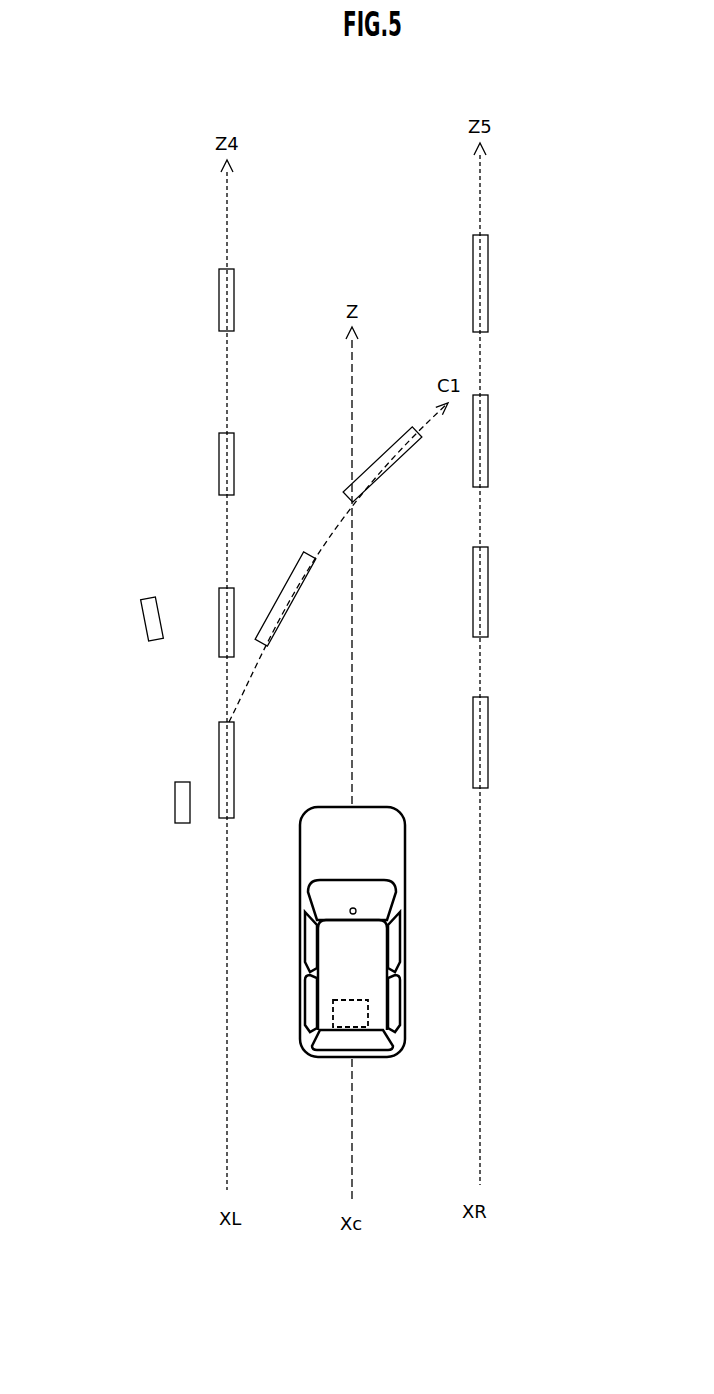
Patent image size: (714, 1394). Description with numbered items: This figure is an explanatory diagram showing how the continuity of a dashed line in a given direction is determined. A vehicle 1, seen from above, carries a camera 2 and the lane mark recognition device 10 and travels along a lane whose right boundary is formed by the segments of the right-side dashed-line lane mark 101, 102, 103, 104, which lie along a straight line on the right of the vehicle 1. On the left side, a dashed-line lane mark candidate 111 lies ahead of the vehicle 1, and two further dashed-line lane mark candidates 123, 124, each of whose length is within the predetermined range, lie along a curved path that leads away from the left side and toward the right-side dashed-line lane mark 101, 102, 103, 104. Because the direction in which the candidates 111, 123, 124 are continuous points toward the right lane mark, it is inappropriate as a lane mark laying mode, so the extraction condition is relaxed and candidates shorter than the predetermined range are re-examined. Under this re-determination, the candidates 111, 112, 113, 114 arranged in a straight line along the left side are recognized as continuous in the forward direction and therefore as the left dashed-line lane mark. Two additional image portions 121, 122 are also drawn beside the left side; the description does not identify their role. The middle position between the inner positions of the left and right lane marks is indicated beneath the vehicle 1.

The vehicle 1 is at (370, 980).
The camera 2 is at (356, 910).
The lane mark recognition device 10 is at (333, 1003).
The right-side dashed-line lane mark 101 is at (480, 742).
The right-side dashed-line lane mark 102 is at (480, 590).
The right-side dashed-line lane mark 103 is at (480, 430).
The right-side dashed-line lane mark 104 is at (480, 283).
The dashed-line lane mark candidate 111 is at (226, 772).
The dashed-line lane mark candidate 112 is at (221, 622).
The dashed-line lane mark candidate 113 is at (228, 465).
The dashed-line lane mark candidate 114 is at (228, 307).
The roadside object 121 is at (182, 798).
The roadside object 122 is at (150, 621).
The dashed-line lane mark candidate 123 is at (295, 598).
The dashed-line lane mark candidate 124 is at (393, 462).